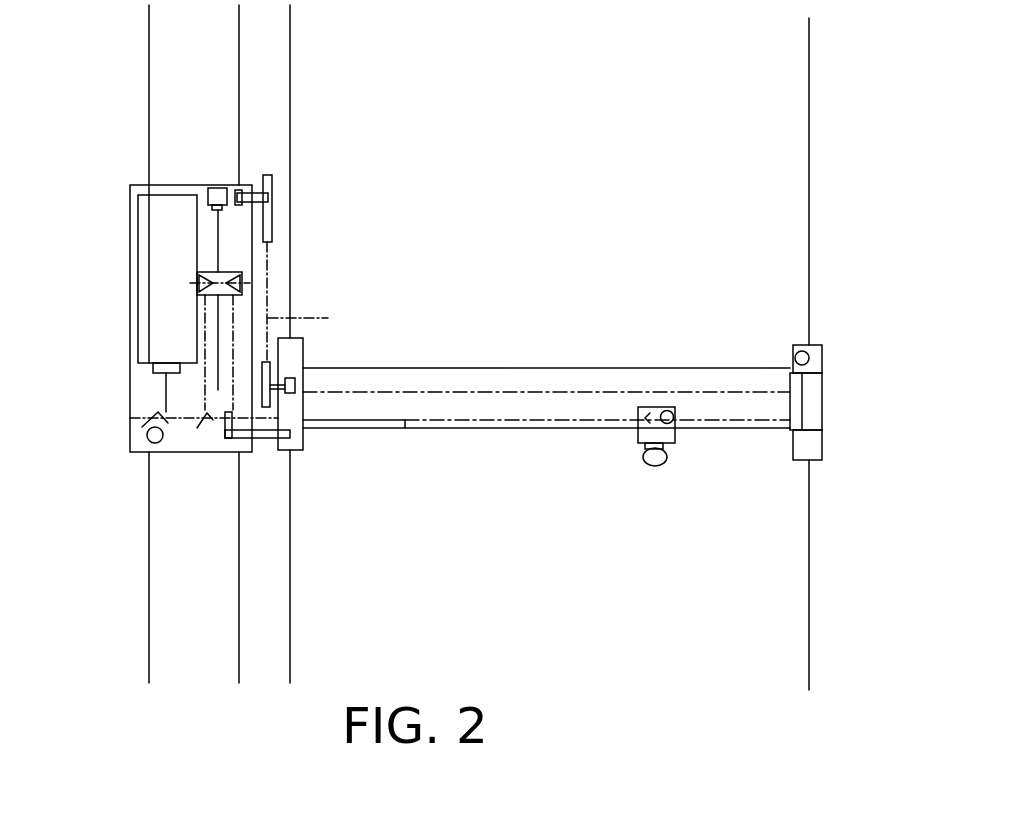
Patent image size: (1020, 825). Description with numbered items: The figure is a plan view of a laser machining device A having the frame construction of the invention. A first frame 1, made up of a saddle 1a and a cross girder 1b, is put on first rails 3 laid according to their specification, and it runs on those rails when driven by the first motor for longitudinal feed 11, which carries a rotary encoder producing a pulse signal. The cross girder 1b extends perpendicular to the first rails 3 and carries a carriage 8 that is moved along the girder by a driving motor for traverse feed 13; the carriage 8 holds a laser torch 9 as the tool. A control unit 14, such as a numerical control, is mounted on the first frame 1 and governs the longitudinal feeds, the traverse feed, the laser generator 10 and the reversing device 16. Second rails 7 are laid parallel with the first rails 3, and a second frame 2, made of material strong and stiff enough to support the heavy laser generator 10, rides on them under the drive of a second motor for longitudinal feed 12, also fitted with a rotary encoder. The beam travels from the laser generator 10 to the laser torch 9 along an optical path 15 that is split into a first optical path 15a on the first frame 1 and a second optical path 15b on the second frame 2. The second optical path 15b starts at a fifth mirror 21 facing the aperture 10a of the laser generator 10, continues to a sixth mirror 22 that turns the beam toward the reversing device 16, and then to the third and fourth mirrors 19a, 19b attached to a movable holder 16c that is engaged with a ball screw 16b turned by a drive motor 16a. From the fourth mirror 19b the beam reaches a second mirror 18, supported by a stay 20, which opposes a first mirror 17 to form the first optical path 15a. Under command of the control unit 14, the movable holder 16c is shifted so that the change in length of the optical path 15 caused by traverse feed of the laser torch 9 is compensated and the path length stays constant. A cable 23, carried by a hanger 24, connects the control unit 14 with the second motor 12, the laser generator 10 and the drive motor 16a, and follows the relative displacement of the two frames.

The first frame 1 is at (567, 352).
The saddle 1a is at (822, 350).
The cross girder 1b is at (462, 370).
The second frame 2 is at (130, 303).
The first rails 3 is at (291, 87).
The second rails 7 is at (150, 28).
The carriage 8 is at (640, 440).
The laser torch 9 is at (655, 466).
The laser generator 10 is at (150, 240).
The aperture 10a is at (152, 368).
The first motor for longitudinal feed 11 is at (800, 352).
The second motor for longitudinal feed 12 is at (137, 458).
The driving motor for traverse feed 13 is at (678, 425).
The control unit 14 is at (815, 410).
The optical path 15 is at (328, 428).
The first optical path 15a is at (405, 432).
The second optical path 15b is at (132, 400).
The reversing device 16 is at (245, 265).
The drive motor 16a is at (217, 188).
The ball screw 16b is at (217, 222).
The movable holder 16c is at (223, 272).
The first mirror 17 is at (655, 430).
The second mirror 18 is at (225, 420).
The third mirror 19a is at (207, 272).
The fourth mirror 19b is at (243, 286).
The stay 20 is at (268, 440).
The fifth mirror 21 is at (147, 430).
The sixth mirror 22 is at (205, 425).
The cable 23 is at (328, 318).
The hanger 24 is at (268, 190).
The machining device A is at (137, 470).